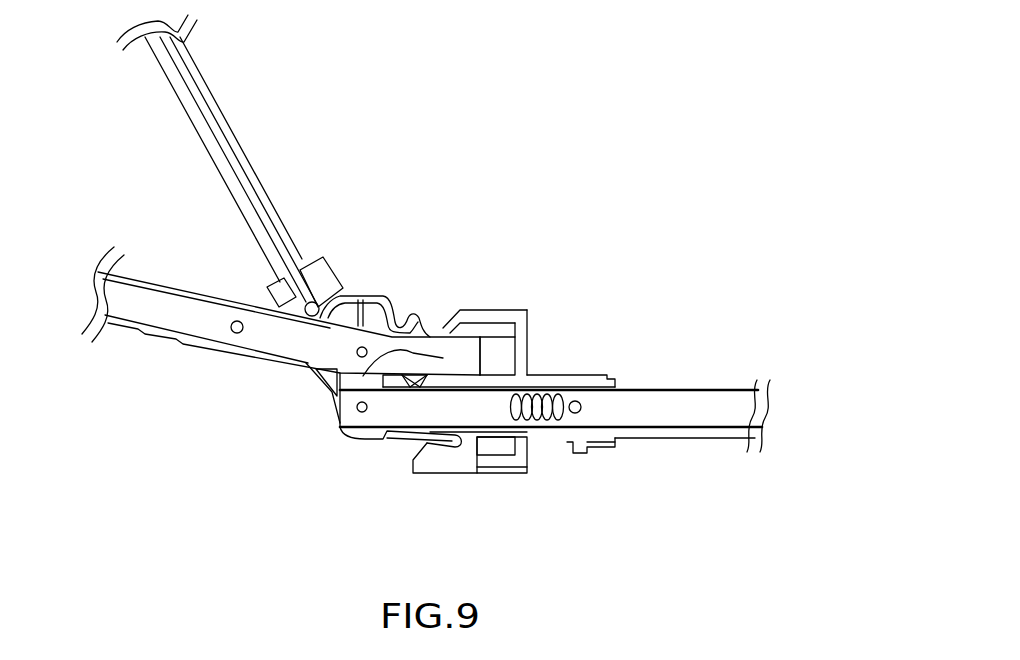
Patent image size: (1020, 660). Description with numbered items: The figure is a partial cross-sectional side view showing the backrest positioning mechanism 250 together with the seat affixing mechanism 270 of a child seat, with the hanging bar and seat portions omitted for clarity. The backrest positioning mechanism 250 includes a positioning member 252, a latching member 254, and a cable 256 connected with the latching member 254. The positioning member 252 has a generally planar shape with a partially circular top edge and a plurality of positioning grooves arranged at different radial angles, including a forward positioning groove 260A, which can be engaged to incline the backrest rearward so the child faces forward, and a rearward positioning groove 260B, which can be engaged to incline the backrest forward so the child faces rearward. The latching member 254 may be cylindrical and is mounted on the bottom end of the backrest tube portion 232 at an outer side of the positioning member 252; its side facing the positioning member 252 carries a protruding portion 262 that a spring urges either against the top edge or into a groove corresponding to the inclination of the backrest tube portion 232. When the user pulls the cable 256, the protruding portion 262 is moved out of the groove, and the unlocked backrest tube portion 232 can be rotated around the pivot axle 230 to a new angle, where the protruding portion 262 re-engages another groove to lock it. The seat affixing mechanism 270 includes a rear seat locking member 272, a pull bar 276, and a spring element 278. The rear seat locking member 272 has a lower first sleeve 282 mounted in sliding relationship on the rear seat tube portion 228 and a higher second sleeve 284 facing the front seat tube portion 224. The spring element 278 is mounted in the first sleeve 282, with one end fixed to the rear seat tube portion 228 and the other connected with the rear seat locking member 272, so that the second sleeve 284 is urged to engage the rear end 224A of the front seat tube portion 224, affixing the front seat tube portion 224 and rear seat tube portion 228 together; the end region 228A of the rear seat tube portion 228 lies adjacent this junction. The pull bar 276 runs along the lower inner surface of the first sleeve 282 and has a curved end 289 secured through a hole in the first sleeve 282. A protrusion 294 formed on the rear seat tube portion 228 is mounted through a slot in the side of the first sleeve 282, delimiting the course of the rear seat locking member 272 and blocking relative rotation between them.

The front seat tube portion 224 is at (138, 311).
The rear end of the front seat tube portion 224A is at (343, 397).
The rear seat tube portion 228 is at (556, 415).
The push rod end member 228A is at (345, 433).
The pivot axle 230 is at (368, 410).
The backrest tube portion 232 is at (234, 159).
The backrest positioning mechanism 250 is at (322, 447).
The positioning member 252 is at (355, 297).
The latching member 254 is at (273, 288).
The cable 256 is at (232, 163).
The forward positioning groove 260A is at (411, 298).
The rearward positioning groove 260B is at (322, 262).
The protruding portion 262 is at (317, 248).
The seat affixing mechanism 270 is at (550, 363).
The rear seat locking member 272 is at (500, 474).
The pull bar 276 is at (726, 439).
The spring element 278 is at (552, 426).
The first sleeve 282 is at (587, 374).
The second sleeve 284 is at (501, 345).
The curved end 289 is at (580, 455).
The protrusion 294 is at (581, 404).